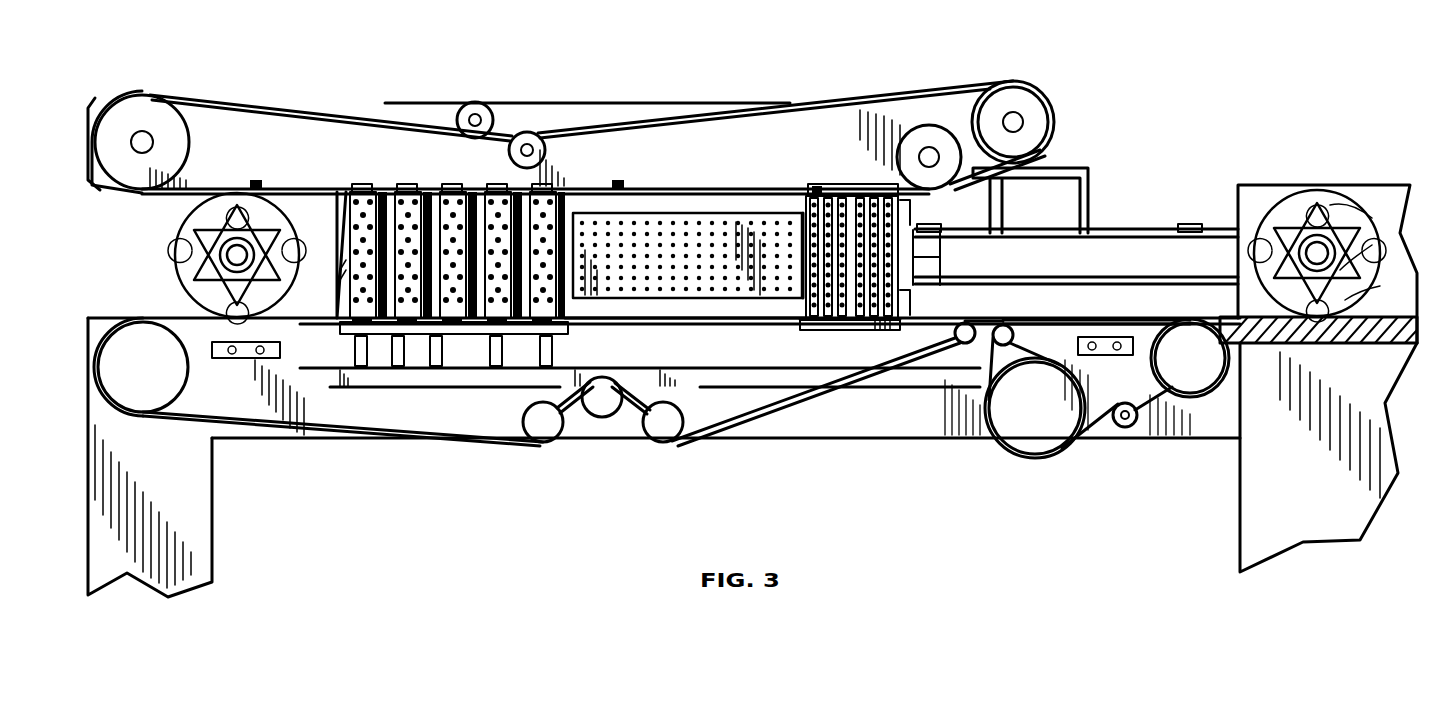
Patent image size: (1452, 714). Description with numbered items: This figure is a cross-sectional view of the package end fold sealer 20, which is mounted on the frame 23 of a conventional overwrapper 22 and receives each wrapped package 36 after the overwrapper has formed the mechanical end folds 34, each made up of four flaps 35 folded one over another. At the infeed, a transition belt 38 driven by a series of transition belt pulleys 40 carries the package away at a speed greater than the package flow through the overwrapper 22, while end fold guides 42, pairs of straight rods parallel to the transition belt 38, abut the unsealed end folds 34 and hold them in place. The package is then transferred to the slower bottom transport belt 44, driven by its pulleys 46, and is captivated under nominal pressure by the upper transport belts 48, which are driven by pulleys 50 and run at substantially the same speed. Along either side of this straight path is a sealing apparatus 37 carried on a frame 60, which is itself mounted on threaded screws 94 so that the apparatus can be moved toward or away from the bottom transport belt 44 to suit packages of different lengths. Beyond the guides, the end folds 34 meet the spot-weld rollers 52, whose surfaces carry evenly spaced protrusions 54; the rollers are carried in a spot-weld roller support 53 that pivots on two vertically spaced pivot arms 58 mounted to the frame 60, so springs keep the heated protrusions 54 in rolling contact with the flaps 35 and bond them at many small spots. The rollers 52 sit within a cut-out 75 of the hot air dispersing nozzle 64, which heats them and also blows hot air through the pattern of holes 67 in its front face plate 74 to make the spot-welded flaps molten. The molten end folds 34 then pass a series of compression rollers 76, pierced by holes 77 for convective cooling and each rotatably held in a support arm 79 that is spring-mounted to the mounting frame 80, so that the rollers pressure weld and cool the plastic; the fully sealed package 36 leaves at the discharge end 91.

The package end fold sealer 20 is at (1072, 68).
The overwrapper 22 is at (1379, 142).
The frame 23 is at (1213, 440).
The end folds 34 is at (1380, 286).
The flaps 35 is at (1372, 245).
The package 36 is at (178, 250).
The sealing apparatus 37 is at (960, 210).
The transition belt 38 is at (1162, 232).
The transition belt pulleys 40 is at (1120, 430).
The end fold guides 42 is at (1118, 230).
The bottom transport belt 44 is at (717, 325).
The pulleys 46 is at (184, 396).
The upper transport belts 48 is at (726, 190).
The pulleys 50 is at (196, 130).
The spot-weld rollers 52 is at (800, 322).
The spot-weld roller support 53 is at (840, 195).
The protrusions 54 is at (826, 192).
The pivot arms 58 is at (868, 195).
The frame 60 is at (447, 390).
The hot air dispersing nozzle 64 is at (637, 213).
The holes 67 is at (652, 297).
The front face plate 74 is at (678, 213).
The cut-out 75 is at (795, 222).
The compression rollers 76 is at (485, 185).
The holes 77 is at (350, 282).
The support arms 79 is at (450, 185).
The mounting frame 80 is at (340, 246).
The discharge end 91 is at (98, 316).
The threaded screws 94 is at (250, 360).